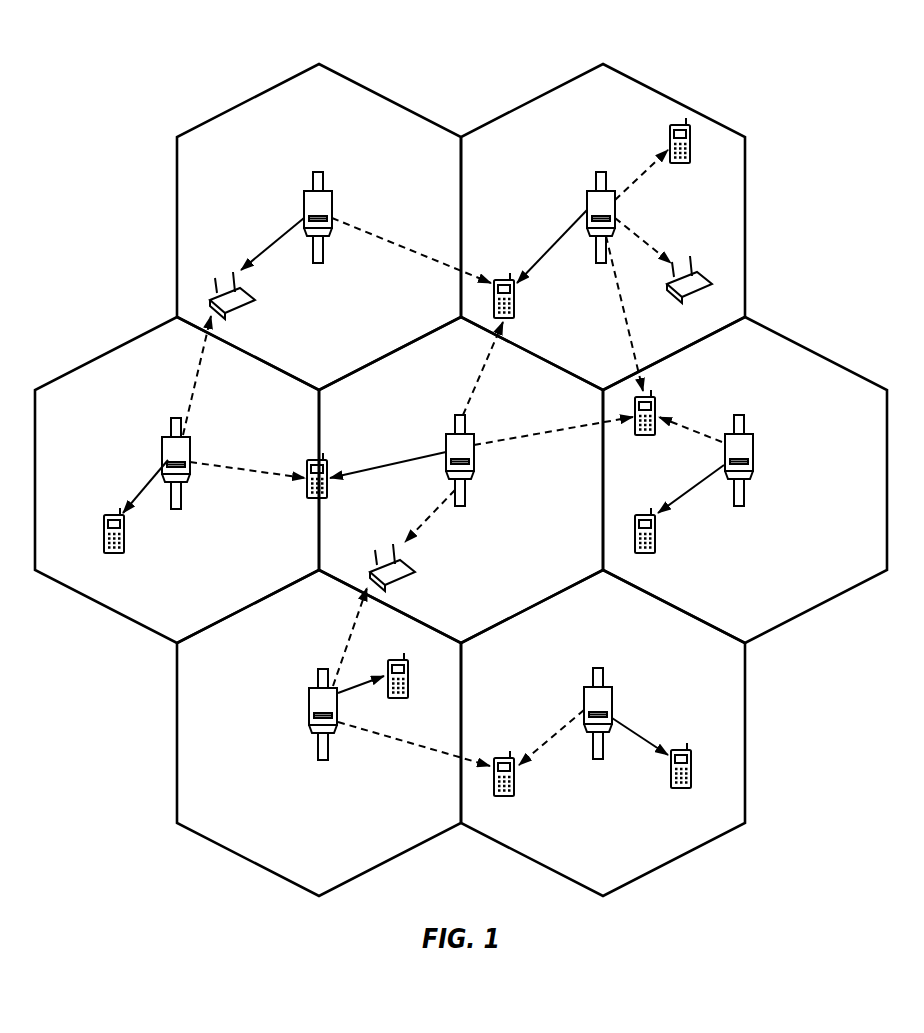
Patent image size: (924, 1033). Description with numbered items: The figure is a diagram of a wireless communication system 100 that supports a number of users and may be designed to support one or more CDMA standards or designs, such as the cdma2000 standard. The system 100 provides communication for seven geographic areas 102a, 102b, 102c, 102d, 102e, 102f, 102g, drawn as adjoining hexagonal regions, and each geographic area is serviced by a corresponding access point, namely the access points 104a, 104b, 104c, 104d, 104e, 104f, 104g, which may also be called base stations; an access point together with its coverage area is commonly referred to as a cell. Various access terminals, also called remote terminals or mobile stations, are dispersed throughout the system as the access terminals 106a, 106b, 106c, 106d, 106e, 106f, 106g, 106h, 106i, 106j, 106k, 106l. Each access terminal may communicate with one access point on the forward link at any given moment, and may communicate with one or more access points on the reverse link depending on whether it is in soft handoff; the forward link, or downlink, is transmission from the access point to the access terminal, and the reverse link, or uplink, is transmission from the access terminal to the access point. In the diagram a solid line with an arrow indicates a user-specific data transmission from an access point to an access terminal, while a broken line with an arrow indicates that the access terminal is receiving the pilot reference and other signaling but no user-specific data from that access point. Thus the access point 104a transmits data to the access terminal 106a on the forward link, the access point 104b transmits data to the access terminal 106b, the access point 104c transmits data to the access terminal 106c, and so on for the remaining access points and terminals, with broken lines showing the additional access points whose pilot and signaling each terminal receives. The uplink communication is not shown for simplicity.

The wireless communication system 100 is at (827, 97).
The geographic area 102a is at (257, 95).
The geographic area 102b is at (676, 98).
The geographic area 102c is at (105, 353).
The geographic area 102d is at (482, 361).
The geographic area 102e is at (830, 360).
The geographic area 102f is at (176, 746).
The geographic area 102g is at (746, 738).
The access point 104a is at (303, 196).
The access point 104b is at (586, 196).
The access point 104c is at (161, 444).
The access point 104d is at (445, 442).
The access point 104e is at (754, 442).
The access point 104f is at (308, 694).
The access point 104g is at (583, 692).
The access terminal 106a is at (254, 298).
The access terminal 106b is at (498, 279).
The access terminal 106c is at (103, 530).
The access terminal 106d is at (306, 466).
The access terminal 106e is at (656, 403).
The access terminal 106f is at (389, 660).
The access terminal 106g is at (496, 758).
The access terminal 106h is at (693, 271).
The access terminal 106i is at (671, 133).
The access terminal 106j is at (416, 566).
The access terminal 106k is at (639, 514).
The access terminal 106l is at (669, 749).